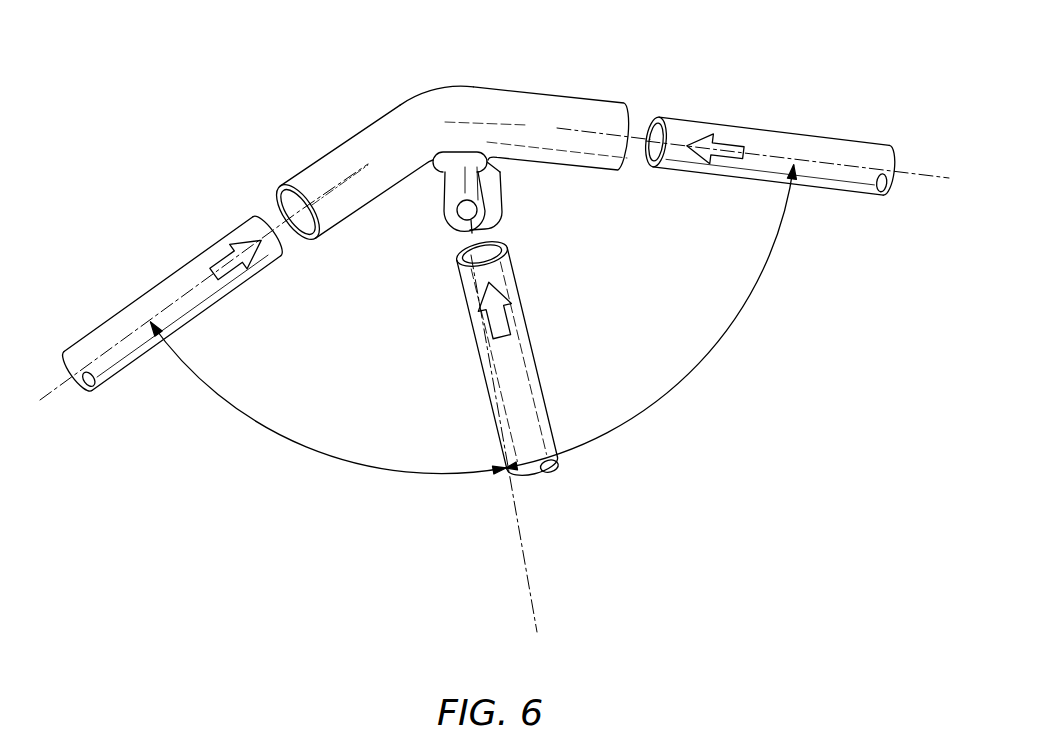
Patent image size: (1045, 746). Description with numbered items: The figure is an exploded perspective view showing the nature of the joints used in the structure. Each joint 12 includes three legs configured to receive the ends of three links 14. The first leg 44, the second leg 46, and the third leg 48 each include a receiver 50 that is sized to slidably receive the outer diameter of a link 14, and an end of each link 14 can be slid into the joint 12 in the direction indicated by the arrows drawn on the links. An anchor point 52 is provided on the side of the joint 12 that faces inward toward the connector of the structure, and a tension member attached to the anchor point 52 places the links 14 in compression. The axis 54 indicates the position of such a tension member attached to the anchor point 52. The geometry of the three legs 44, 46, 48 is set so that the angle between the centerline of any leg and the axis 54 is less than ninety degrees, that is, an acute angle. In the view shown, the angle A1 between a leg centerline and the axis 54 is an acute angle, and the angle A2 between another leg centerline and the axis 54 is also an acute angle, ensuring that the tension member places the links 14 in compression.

The joint 12 is at (433, 76).
The link 14 is at (153, 300).
The first leg 44 is at (578, 103).
The second leg 46 is at (338, 160).
The third leg 48 is at (502, 186).
The receiver 50 is at (285, 193).
The anchor point 52 is at (447, 216).
The axis 54 is at (528, 568).
The angle A1 is at (297, 443).
The angle A2 is at (722, 340).